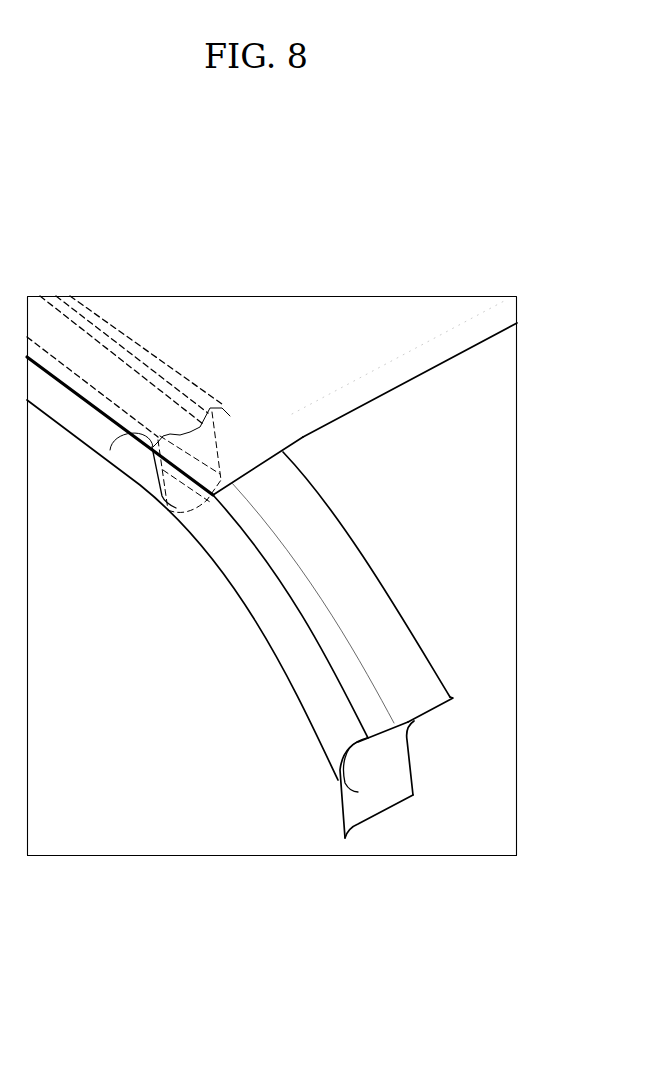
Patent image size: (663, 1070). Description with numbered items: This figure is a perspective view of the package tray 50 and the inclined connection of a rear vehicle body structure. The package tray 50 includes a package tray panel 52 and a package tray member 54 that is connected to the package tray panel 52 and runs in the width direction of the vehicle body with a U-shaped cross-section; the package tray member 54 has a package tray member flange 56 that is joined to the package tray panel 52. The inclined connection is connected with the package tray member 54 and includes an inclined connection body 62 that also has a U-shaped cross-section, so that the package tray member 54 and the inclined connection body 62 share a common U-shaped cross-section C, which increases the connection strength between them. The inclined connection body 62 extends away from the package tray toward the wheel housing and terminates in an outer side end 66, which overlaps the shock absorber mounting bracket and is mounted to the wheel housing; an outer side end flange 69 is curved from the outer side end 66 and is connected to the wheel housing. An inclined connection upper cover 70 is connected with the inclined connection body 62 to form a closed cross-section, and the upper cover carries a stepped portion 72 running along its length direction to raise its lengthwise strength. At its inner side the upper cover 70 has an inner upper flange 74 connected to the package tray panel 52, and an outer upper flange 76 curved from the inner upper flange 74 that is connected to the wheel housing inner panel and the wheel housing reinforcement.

The package tray 50 is at (390, 412).
The package tray panel 52 is at (408, 377).
The package tray member 54 is at (137, 504).
The package tray member flange 56 is at (110, 450).
The inclined connection body 62 is at (338, 727).
The outer side end 66 is at (395, 766).
The outer side end flange 69 is at (387, 797).
The inclined connection upper cover 70 is at (423, 627).
The stepped portion 72 is at (350, 580).
The inner upper flange 74 is at (242, 452).
The outer upper flange 76 is at (452, 699).
The U-shaped cross-section C is at (197, 505).